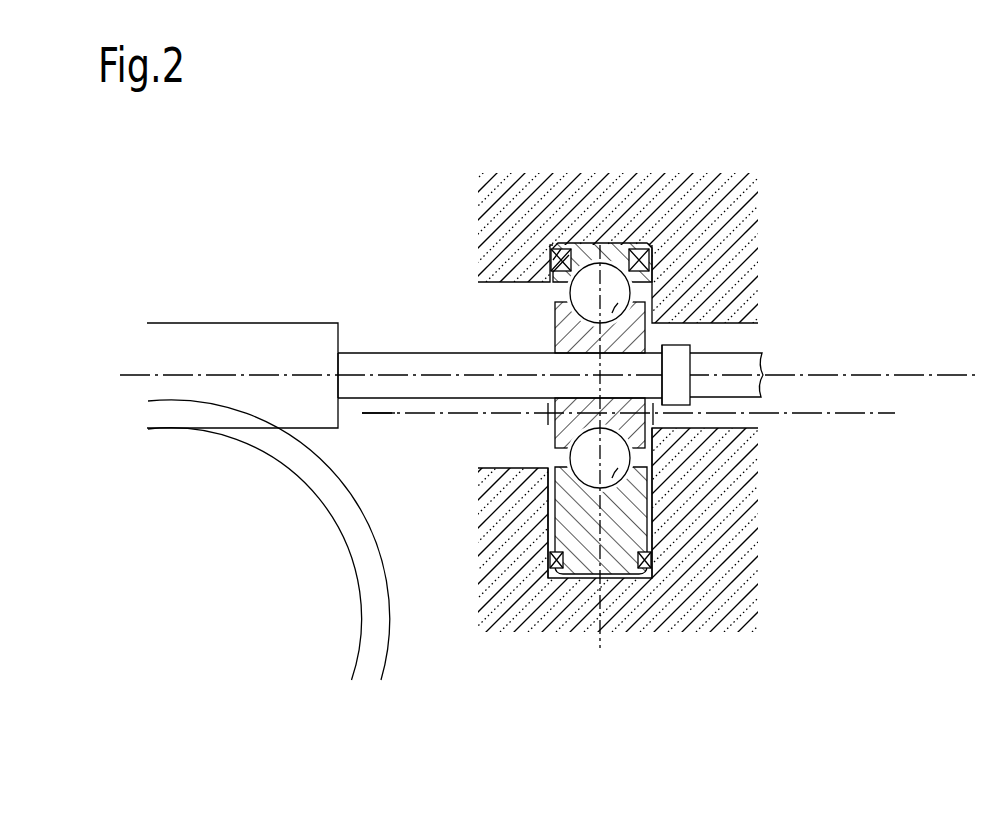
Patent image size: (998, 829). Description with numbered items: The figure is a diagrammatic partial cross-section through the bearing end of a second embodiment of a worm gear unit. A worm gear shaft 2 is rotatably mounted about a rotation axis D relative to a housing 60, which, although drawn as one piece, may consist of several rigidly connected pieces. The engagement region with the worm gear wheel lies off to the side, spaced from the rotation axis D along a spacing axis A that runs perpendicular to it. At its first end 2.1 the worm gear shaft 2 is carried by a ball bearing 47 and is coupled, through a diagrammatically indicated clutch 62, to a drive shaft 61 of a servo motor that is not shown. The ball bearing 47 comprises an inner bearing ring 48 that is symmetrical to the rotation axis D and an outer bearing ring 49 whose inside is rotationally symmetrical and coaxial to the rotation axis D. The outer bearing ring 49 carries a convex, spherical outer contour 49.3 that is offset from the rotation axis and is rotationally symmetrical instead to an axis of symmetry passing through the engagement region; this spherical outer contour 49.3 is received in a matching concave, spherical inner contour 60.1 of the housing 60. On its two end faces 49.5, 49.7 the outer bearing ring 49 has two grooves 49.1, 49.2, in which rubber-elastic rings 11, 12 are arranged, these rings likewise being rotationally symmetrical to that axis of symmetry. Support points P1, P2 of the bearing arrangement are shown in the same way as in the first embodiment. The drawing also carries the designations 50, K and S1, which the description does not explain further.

The worm gear shaft 2 is at (388, 357).
The first end 2.1 is at (663, 340).
The rubber-elastic ring 11 is at (547, 260).
The rubber-elastic ring 12 is at (653, 262).
The ball bearing 47 is at (523, 498).
The inner bearing ring 48 is at (555, 318).
The outer bearing ring 49 is at (555, 282).
The groove 49.1 is at (586, 242).
The groove 49.2 is at (630, 243).
The spherical outer contour 49.3 is at (596, 242).
The end face 49.5 is at (551, 270).
The end face 49.7 is at (652, 312).
The housing wall section 50 is at (622, 608).
The housing 60 is at (720, 222).
The concave spherical inner contour 60.1 is at (620, 248).
The drive shaft 61 is at (730, 390).
The clutch 62 is at (676, 352).
The spacing axis A is at (598, 616).
The rotation axis D is at (363, 378).
The bearing seal K is at (547, 553).
The support point P1 is at (545, 415).
The support point P2 is at (655, 425).
The axial gap S1 is at (375, 415).